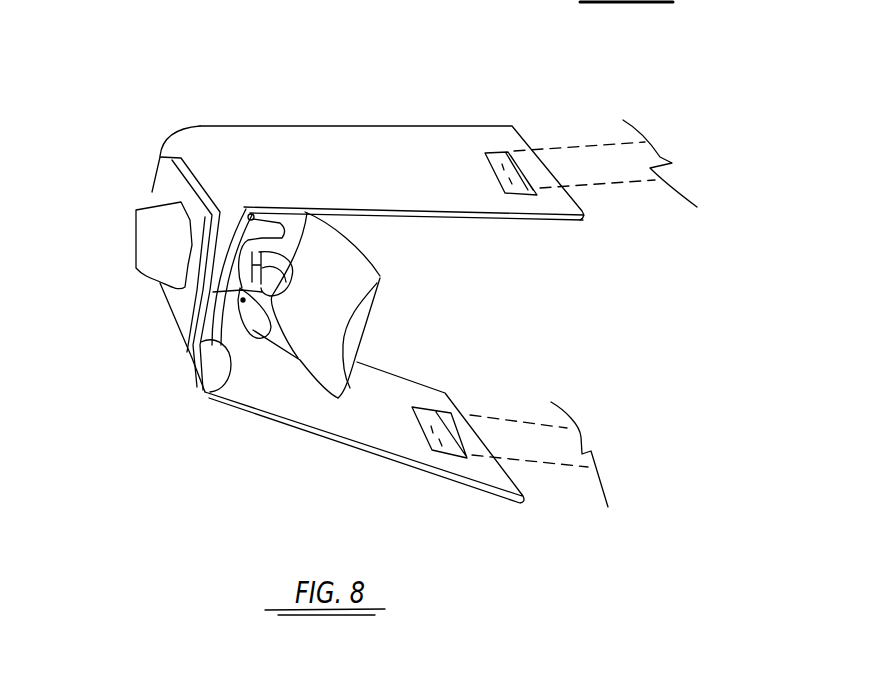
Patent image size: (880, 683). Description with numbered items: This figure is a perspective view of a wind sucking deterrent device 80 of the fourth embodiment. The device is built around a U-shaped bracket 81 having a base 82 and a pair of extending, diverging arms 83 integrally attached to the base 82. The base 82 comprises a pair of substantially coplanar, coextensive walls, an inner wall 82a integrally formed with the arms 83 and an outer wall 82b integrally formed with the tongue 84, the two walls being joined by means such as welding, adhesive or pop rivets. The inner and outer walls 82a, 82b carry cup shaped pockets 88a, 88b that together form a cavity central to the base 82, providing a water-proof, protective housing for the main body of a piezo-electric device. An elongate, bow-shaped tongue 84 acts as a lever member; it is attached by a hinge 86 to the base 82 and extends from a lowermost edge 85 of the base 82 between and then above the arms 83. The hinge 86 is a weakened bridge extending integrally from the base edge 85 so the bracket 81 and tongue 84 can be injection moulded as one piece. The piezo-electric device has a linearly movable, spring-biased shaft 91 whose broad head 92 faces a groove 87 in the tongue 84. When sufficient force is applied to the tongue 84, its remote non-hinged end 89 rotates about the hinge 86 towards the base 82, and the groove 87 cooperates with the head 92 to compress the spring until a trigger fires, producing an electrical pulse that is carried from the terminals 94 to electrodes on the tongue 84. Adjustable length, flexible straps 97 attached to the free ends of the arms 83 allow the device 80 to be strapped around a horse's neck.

The wind sucking deterrent device 80 is at (177, 514).
The U-shaped bracket 81 is at (453, 122).
The base 82 is at (177, 306).
The inner wall 82a is at (207, 397).
The outer wall 82b is at (177, 305).
The arms 83 is at (338, 138).
The tongue 84 is at (383, 267).
The lowermost edge 85 is at (170, 134).
The hinge 86 is at (150, 175).
The groove 87 is at (293, 264).
The cup shaped pocket 88a is at (244, 207).
The cup shaped pocket 88b is at (133, 229).
The remote non-hinged end 89 is at (357, 333).
The shaft 91 is at (215, 295).
The broad head 92 is at (304, 214).
The terminals 94 is at (253, 213).
The straps 97 is at (582, 158).